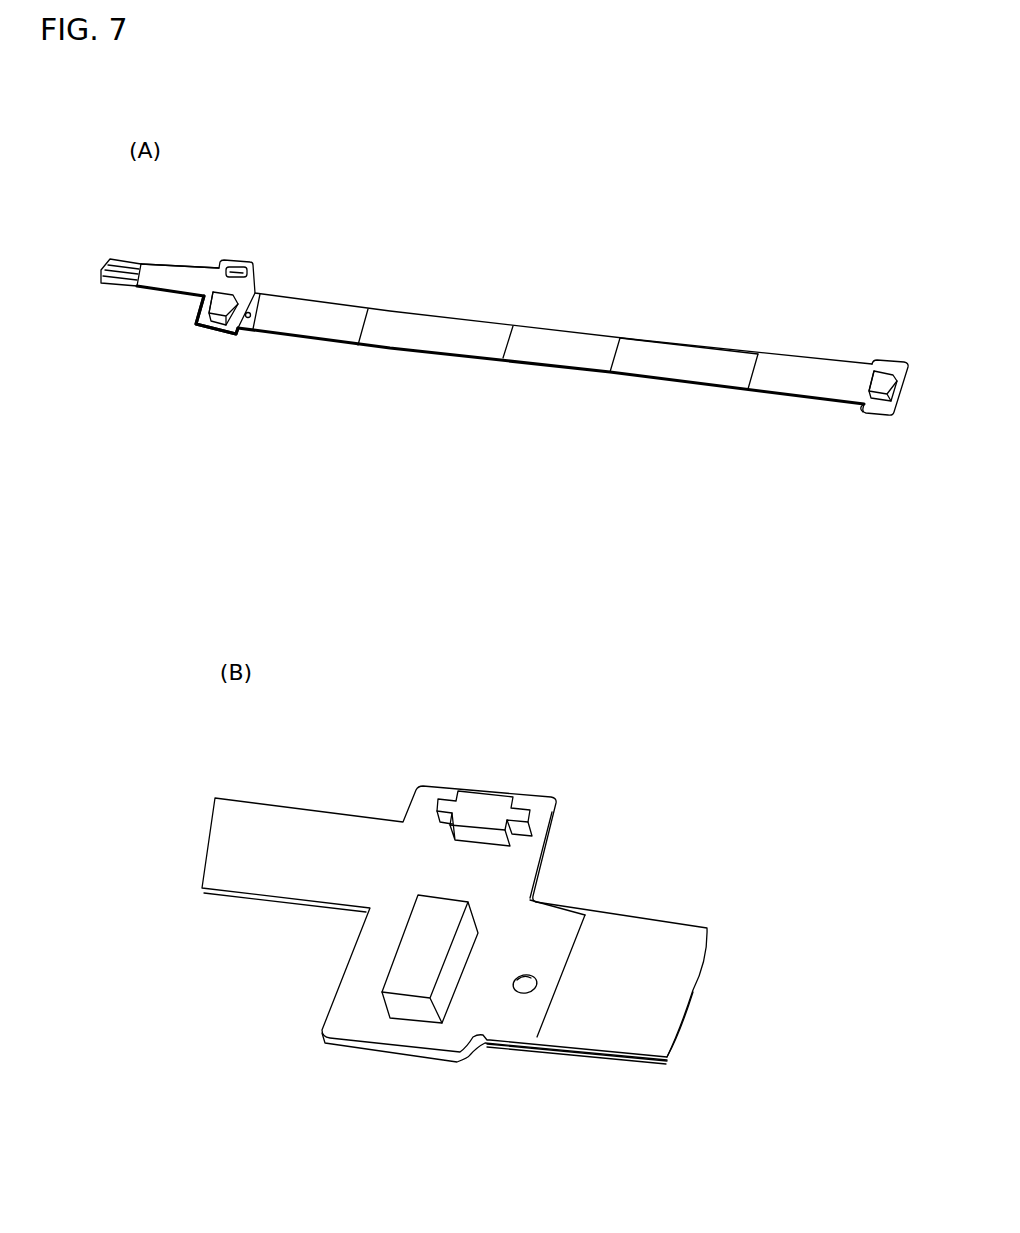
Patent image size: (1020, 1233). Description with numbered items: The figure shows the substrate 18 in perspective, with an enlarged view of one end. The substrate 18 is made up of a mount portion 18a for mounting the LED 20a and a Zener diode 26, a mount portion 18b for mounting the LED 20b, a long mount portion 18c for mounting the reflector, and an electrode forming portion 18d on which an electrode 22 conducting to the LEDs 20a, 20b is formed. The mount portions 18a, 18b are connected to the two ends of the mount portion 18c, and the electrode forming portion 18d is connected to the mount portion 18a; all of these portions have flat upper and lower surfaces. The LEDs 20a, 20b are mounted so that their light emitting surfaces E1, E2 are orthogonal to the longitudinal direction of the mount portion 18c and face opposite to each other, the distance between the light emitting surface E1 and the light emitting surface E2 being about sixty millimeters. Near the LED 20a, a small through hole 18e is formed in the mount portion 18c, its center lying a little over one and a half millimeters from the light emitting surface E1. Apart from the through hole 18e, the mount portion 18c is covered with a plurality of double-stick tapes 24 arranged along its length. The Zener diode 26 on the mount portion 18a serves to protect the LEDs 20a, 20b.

The substrate 18 is at (530, 393).
The mount portion 18a is at (201, 326).
The mount portion 18b is at (868, 414).
The mount portion 18c is at (655, 358).
The electrode forming portion 18d is at (173, 279).
The through hole 18e is at (523, 993).
The LED 20a is at (222, 330).
The LED 20b is at (876, 371).
The electrode 22 is at (125, 259).
The double-stick tapes 24 is at (333, 320).
The Zener diode 26 is at (240, 266).
The light emitting surface E1 is at (236, 306).
The light emitting surface E2 is at (855, 393).